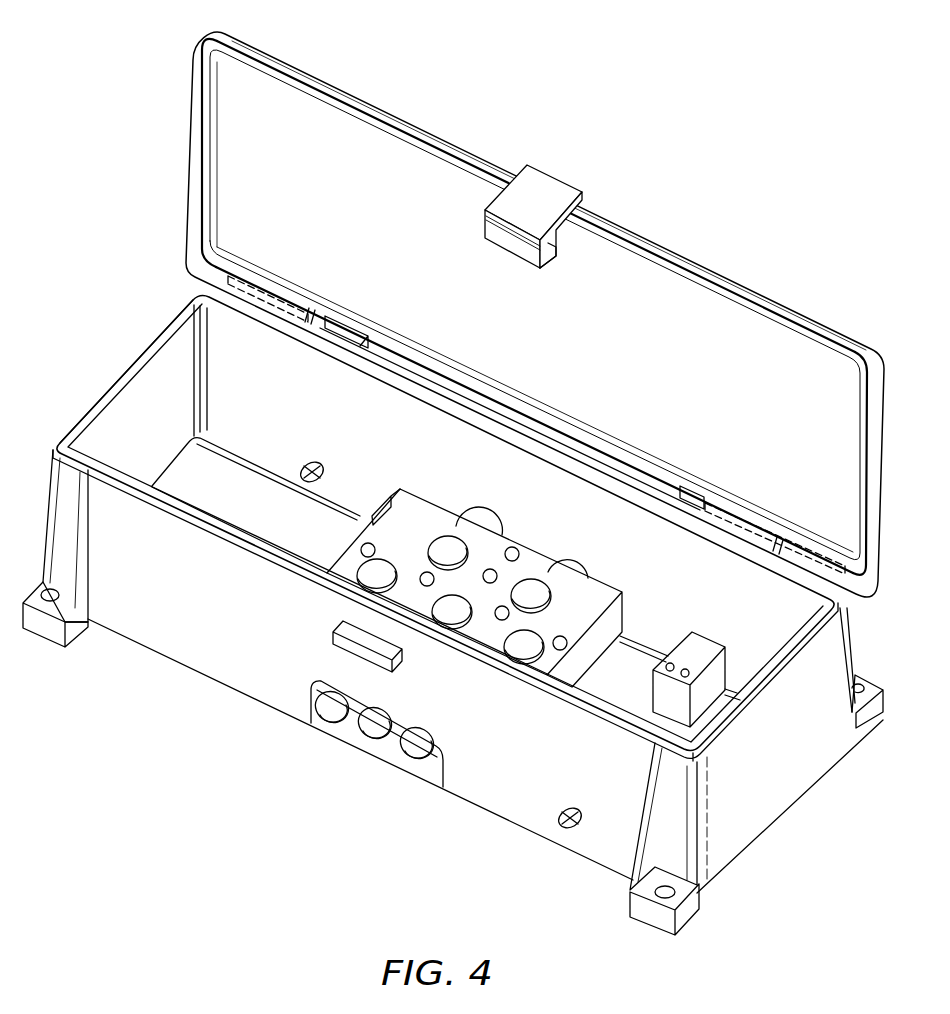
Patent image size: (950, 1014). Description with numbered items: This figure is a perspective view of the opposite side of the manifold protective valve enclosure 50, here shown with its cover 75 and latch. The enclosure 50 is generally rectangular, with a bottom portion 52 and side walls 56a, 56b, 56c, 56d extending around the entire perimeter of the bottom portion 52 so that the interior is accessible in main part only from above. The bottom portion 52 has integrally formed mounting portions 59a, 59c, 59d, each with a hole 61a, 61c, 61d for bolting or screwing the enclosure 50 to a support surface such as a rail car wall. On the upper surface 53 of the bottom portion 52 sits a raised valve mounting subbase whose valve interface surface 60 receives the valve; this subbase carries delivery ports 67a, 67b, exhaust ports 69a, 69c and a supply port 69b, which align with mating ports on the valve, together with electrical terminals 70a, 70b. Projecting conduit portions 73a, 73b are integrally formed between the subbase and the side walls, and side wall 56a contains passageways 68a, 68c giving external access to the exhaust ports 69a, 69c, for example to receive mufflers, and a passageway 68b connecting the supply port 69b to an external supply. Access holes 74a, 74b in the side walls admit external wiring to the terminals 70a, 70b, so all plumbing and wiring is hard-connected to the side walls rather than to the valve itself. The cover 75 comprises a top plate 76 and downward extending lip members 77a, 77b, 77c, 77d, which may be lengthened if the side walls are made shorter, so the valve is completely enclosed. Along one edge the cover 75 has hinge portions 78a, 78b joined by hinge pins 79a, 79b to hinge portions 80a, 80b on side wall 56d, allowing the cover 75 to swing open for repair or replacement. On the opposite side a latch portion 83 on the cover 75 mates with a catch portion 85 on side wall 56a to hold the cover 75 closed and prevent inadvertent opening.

The manifold protective valve enclosure 50 is at (456, 488).
The bottom portion 52 is at (454, 621).
The upper surface 53 is at (187, 480).
The side wall 56a is at (177, 622).
The side wall 56b is at (103, 430).
The side wall 56c is at (230, 357).
The side wall 56d is at (783, 777).
The mounting portion 59a is at (863, 695).
The mounting portion 59c is at (82, 577).
The mounting portion 59d is at (679, 845).
The valve interface surface 60 is at (471, 564).
The hole 61a is at (860, 678).
The hole 61c is at (52, 588).
The hole 61d is at (673, 891).
The delivery port 67a is at (543, 590).
The delivery port 67b is at (443, 547).
The passageway 68a is at (330, 712).
The passageway 68b is at (371, 733).
The passageway 68c is at (413, 757).
The exhaust port 69a is at (527, 640).
The supply port 69b is at (443, 613).
The exhaust port 69c is at (367, 577).
The electrical terminal 70a is at (697, 648).
The electrical terminal 70b is at (373, 507).
The conduit portion 73a is at (477, 510).
The conduit portion 73b is at (570, 553).
The access hole 74a is at (563, 827).
The access hole 74b is at (300, 468).
The cover 75 is at (504, 313).
The top plate 76 is at (390, 176).
The lip member 77a is at (205, 178).
The lip member 77b is at (450, 147).
The lip member 77c is at (880, 433).
The lip member 77d is at (830, 560).
The hinge portion 78a is at (253, 280).
The hinge portion 78b is at (817, 555).
The hinge pin 79a is at (320, 314).
The hinge pin 79b is at (742, 532).
The hinge portion 80a is at (694, 490).
The hinge portion 80b is at (360, 336).
The latch portion 83 is at (505, 243).
The catch portion 85 is at (345, 649).